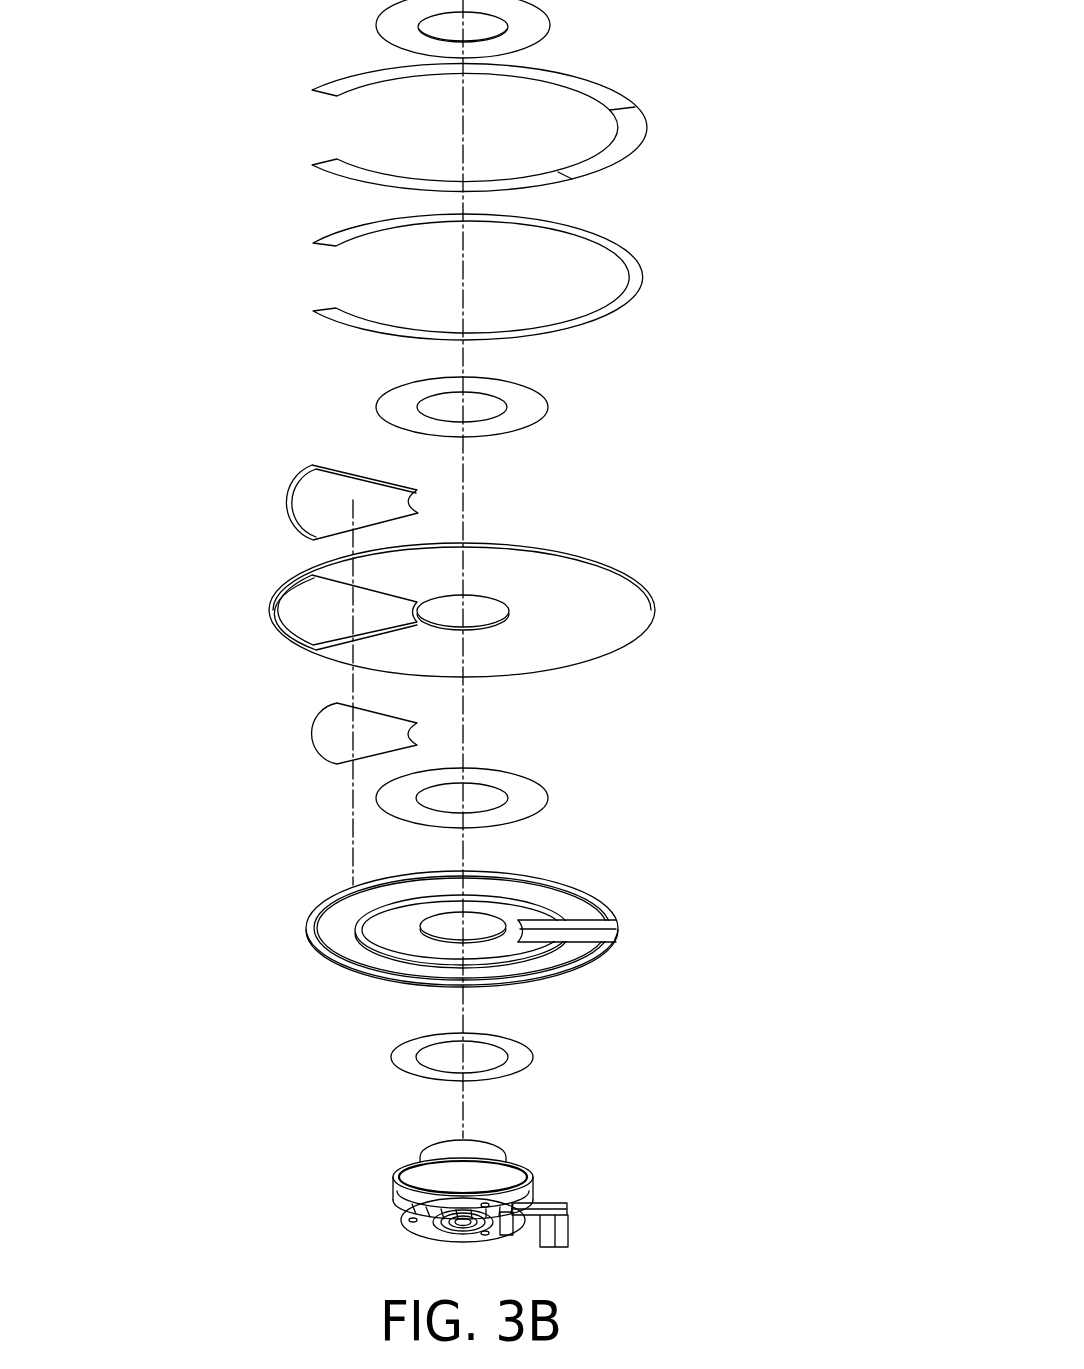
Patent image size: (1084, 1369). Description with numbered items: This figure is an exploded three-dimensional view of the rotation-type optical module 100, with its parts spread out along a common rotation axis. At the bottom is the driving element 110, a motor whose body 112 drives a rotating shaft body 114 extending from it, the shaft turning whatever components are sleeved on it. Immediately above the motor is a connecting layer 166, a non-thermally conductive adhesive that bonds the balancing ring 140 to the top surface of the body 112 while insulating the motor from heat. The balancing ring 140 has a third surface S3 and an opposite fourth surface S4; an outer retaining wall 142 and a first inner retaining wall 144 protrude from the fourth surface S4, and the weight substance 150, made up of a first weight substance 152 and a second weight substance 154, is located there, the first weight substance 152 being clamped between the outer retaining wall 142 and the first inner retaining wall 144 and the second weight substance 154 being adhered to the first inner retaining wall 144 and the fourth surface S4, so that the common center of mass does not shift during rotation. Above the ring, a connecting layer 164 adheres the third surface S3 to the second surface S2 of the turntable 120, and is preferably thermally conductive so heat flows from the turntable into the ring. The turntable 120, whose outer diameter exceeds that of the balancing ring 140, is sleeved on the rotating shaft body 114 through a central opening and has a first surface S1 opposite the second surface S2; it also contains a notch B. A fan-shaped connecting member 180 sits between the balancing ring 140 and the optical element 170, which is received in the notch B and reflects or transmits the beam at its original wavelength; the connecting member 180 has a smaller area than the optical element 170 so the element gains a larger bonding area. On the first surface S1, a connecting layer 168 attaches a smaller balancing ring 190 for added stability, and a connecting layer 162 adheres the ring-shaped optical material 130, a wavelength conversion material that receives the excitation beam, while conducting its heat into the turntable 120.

The rotation-type optical module 100 is at (748, 1247).
The driving element 110 is at (286, 1118).
The body 112 is at (415, 1182).
The rotating shaft body 114 is at (430, 1152).
The turntable 120 is at (482, 594).
The optical material 130 is at (630, 147).
The balancing ring 140 is at (432, 652).
The outer retaining wall 142 is at (323, 957).
The first inner retaining wall 144 is at (464, 954).
The weight substance 150 is at (171, 267).
The first weight substance 152 is at (598, 935).
The second weight substance 154 is at (528, 937).
The connecting layer 162 is at (632, 277).
The connecting layer 164 is at (530, 798).
The connecting layer 166 is at (523, 1058).
The connecting layer 168 is at (533, 405).
The optical element 170 is at (297, 503).
The connecting member 180 is at (332, 733).
The balancing ring 190 is at (528, 29).
The first surface S1 is at (605, 563).
The second surface S2 is at (585, 643).
The third surface S3 is at (593, 893).
The fourth surface S4 is at (562, 958).
The notch B is at (313, 615).